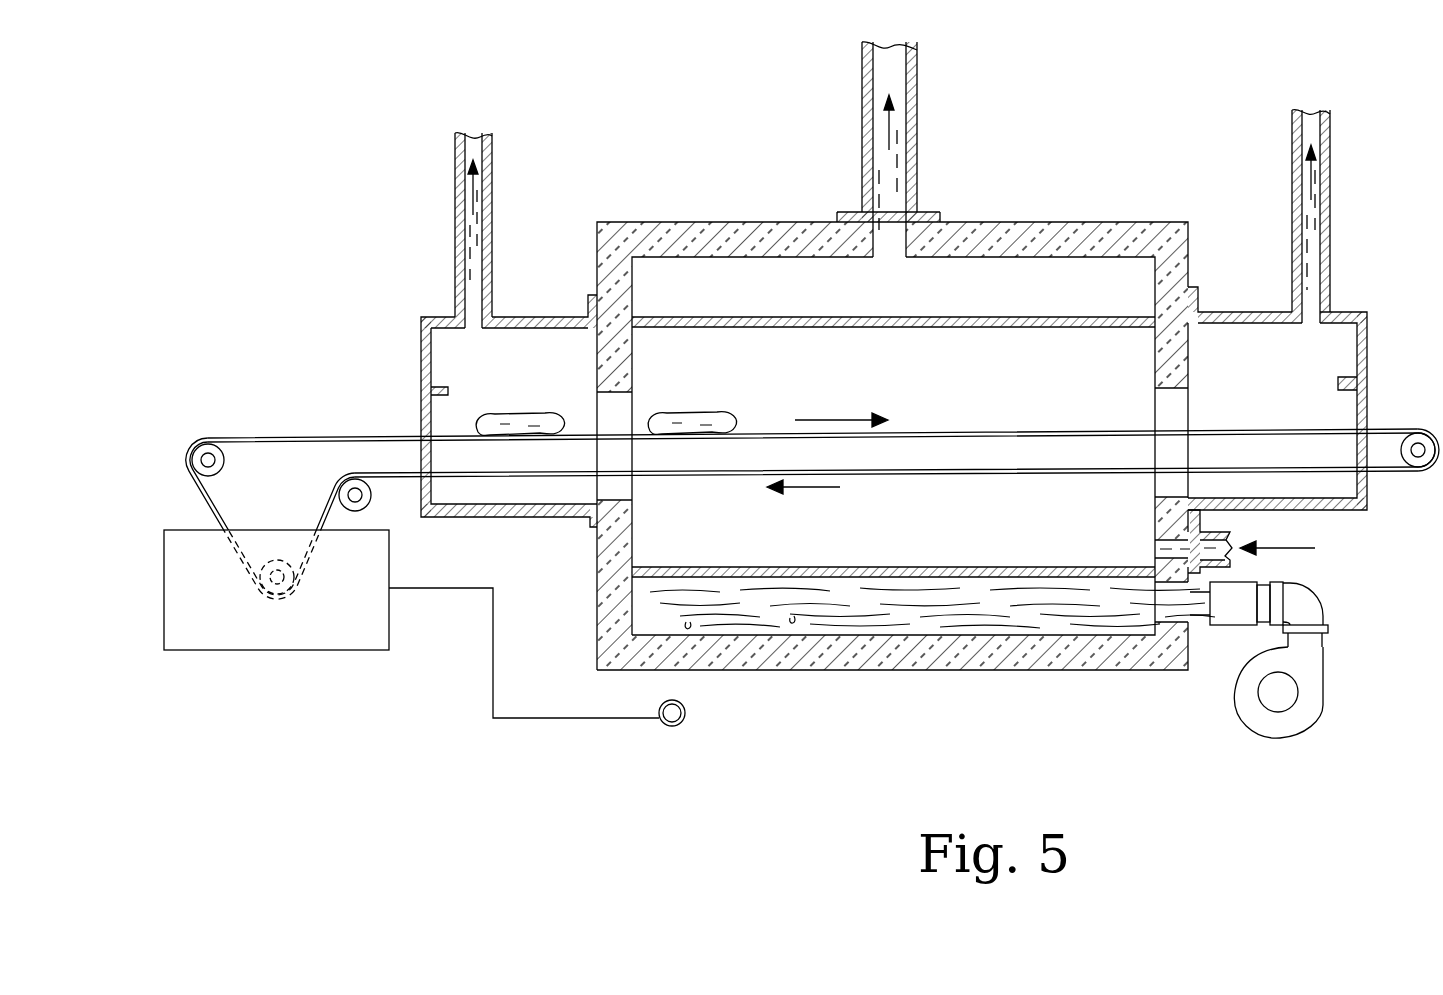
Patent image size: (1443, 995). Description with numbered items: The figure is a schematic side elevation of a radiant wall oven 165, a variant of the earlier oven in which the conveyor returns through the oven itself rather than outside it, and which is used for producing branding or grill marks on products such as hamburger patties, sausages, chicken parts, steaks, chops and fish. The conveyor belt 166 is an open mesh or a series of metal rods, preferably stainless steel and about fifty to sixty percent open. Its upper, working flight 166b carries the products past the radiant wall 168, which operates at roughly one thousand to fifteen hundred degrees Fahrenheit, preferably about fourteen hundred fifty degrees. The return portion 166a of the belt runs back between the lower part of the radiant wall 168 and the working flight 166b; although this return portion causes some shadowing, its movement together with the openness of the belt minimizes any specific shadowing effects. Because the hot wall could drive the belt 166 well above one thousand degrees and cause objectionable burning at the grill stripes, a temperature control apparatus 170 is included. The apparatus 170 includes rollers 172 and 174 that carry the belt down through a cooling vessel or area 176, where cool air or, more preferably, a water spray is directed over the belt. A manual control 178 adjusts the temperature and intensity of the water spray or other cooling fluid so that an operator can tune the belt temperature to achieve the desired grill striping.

The radiant wall oven 165 is at (1074, 174).
The conveyor belt 166 is at (962, 423).
The return portion of the belt 166a is at (997, 478).
The upper working flight of the conveyor 166b is at (1032, 430).
The radiant wall 168 is at (925, 328).
The temperature control apparatus 170 is at (134, 636).
The roller 172 is at (345, 480).
The roller 174 is at (265, 595).
The cooling vessel or area 176 is at (342, 650).
The manual control 178 is at (680, 722).